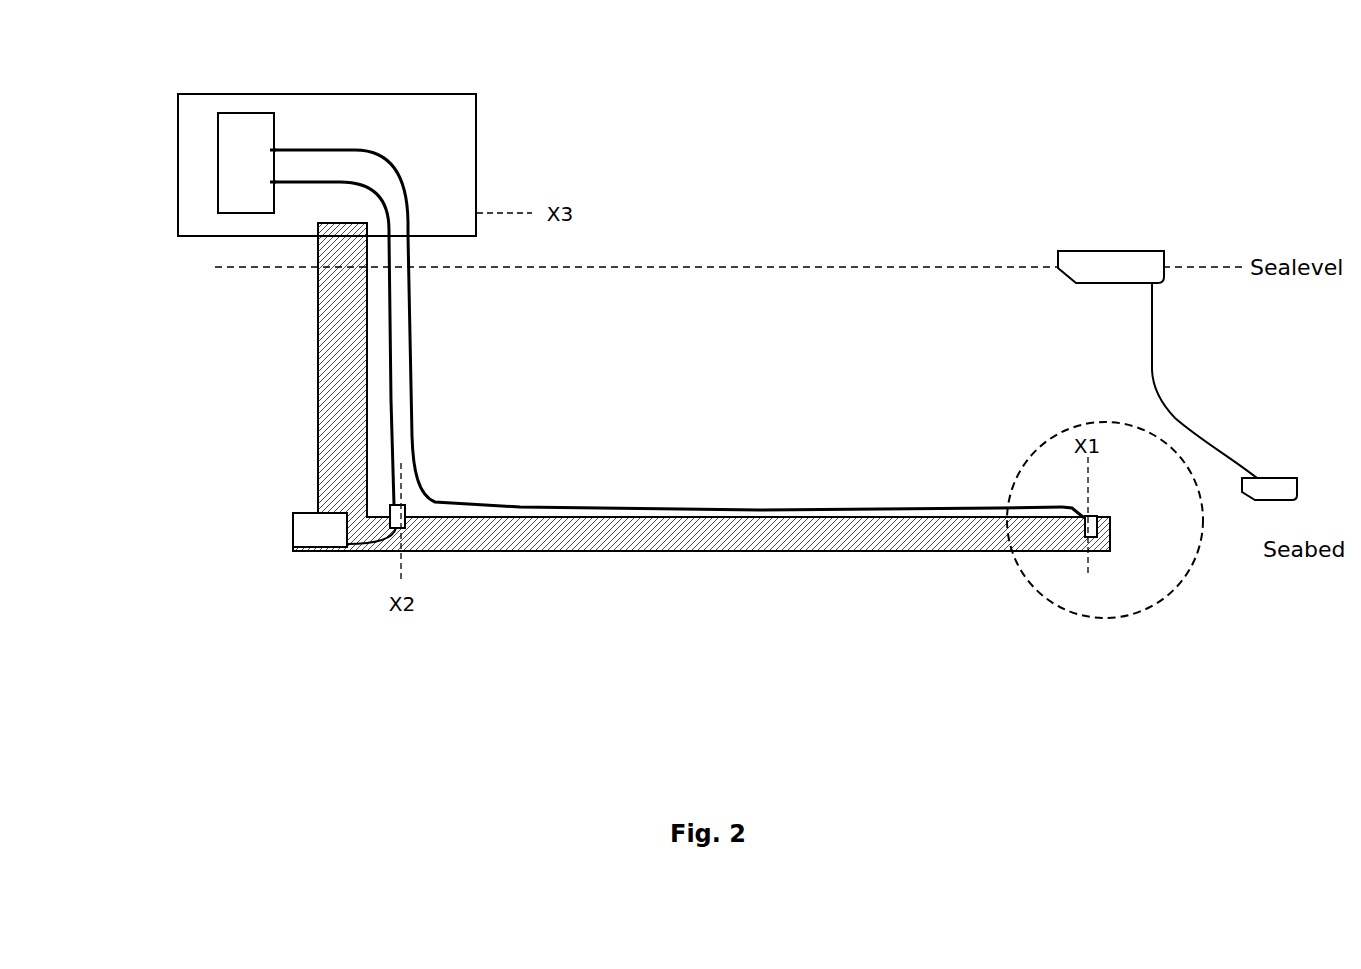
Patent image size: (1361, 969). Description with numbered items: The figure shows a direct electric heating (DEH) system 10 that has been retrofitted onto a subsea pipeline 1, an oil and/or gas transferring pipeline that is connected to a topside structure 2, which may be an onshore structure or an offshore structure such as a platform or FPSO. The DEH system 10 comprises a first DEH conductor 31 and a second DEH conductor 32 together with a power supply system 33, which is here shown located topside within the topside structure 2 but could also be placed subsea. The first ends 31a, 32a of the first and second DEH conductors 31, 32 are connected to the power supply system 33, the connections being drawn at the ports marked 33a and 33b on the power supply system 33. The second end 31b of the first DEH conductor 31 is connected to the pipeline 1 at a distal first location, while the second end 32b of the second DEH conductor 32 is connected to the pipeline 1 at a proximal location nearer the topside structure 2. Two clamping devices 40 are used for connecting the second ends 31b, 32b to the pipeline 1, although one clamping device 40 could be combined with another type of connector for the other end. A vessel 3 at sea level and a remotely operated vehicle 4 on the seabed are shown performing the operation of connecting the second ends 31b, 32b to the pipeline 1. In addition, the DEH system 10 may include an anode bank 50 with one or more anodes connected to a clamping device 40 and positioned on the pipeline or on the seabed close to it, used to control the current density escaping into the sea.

The subsea pipeline 1 is at (340, 373).
The topside structure 2 is at (213, 103).
The vessel 3 is at (1169, 225).
The remotely operated vehicle (ROV) 4 is at (1269, 489).
The direct electric heating (DEH) system 10 is at (866, 179).
The first DEH conductor 31 is at (415, 430).
The first end of the first DEH conductor 31a is at (303, 147).
The second end of the first DEH conductor 31b is at (1058, 507).
The second DEH conductor 32 is at (393, 410).
The first end of the second DEH conductor 32a is at (288, 177).
The second end of the second DEH conductor 32b is at (393, 502).
The power supply system 33 is at (217, 163).
The first port of connection unit 33a is at (252, 152).
The second port of connection unit 33b is at (252, 183).
The clamping device 40 is at (405, 522).
The anode bank 50 is at (344, 530).